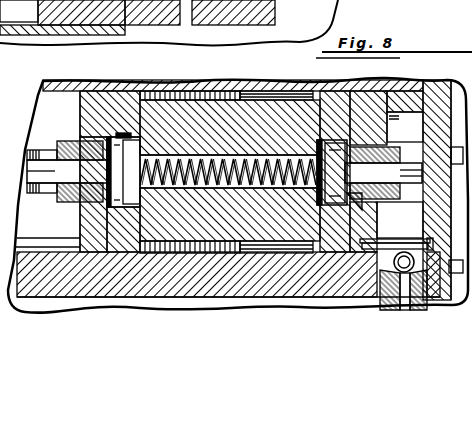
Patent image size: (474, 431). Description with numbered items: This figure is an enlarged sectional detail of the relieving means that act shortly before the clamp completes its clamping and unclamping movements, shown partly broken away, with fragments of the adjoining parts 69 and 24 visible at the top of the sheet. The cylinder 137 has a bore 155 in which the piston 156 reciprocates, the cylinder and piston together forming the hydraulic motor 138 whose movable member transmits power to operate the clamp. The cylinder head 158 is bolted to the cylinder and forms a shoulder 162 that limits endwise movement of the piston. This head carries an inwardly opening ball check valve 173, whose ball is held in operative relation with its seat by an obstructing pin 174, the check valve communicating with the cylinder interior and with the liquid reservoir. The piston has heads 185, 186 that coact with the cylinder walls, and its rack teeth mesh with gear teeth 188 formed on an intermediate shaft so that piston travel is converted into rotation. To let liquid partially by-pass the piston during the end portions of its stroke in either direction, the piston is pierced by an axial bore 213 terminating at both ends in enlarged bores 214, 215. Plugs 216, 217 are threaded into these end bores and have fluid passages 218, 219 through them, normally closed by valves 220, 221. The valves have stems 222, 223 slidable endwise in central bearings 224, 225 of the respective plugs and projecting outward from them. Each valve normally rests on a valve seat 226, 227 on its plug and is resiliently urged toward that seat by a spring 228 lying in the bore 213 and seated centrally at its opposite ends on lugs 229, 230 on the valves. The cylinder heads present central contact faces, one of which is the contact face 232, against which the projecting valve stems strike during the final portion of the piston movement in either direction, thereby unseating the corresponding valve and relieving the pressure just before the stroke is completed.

The housing part 69 is at (21, 13).
The housing 24 is at (276, 33).
The cylinder 137 is at (77, 276).
The hydraulic motor 138 is at (188, 314).
The bore 155 is at (160, 254).
The piston 156 is at (256, 254).
The cylinder head 158 is at (444, 282).
The shoulder 162 is at (400, 111).
The check valve 173 is at (404, 309).
The obstructing pin 174 is at (370, 252).
The piston head 185 is at (120, 210).
The piston head 186 is at (328, 252).
The gear teeth 188 is at (207, 252).
The bore 213 is at (262, 226).
The enlarged bore 214 is at (124, 133).
The enlarged bore 215 is at (340, 137).
The plug 216 is at (78, 138).
The plug 217 is at (411, 92).
The fluid passage 218 is at (49, 125).
The fluid passage 219 is at (405, 127).
The valve 220 is at (100, 252).
The valve 221 is at (300, 207).
The valve stem 222 is at (90, 172).
The valve stem 223 is at (348, 172).
The central bearing 224 is at (60, 190).
The central bearing 225 is at (364, 205).
The valve seat 226 is at (76, 204).
The valve seat 227 is at (396, 231).
The spring 228 is at (183, 157).
The lug 229 is at (131, 134).
The lug 230 is at (293, 108).
The contact face 232 is at (404, 136).